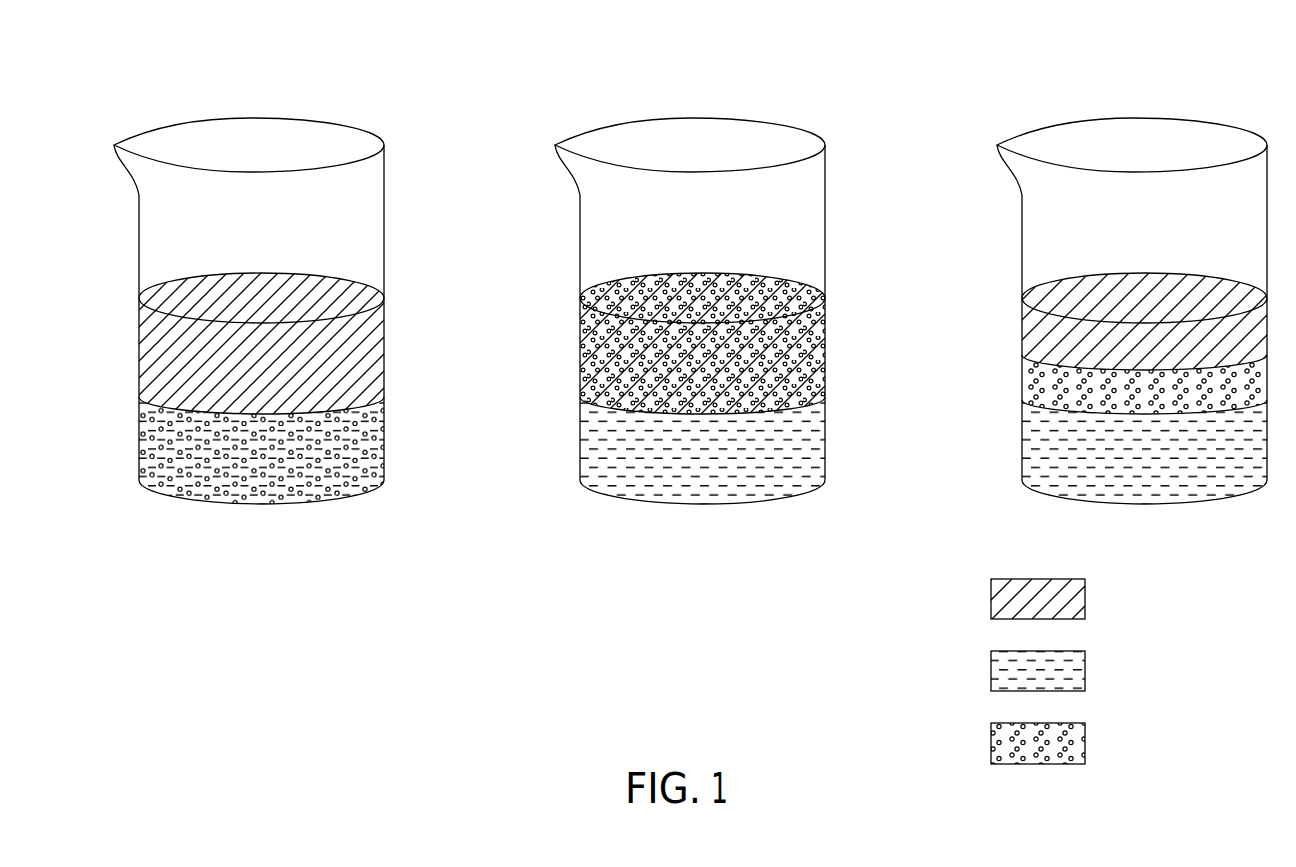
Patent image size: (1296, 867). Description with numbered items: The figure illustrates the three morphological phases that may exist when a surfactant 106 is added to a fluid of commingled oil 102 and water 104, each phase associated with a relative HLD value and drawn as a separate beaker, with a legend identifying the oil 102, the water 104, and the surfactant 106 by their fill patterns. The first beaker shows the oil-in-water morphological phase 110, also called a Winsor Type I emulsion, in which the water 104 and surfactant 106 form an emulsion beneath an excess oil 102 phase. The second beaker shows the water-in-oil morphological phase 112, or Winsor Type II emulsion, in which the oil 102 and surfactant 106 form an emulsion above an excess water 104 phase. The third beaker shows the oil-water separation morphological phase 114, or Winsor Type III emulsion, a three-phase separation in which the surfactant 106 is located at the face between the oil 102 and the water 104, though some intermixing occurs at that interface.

The oil 102 is at (991, 586).
The water 104 is at (991, 656).
The surfactant 106 is at (991, 729).
The oil-in-water morphological phase 110 is at (288, 70).
The water-in-oil morphological phase 112 is at (729, 70).
The oil-water separation morphological phase 114 is at (1171, 70).